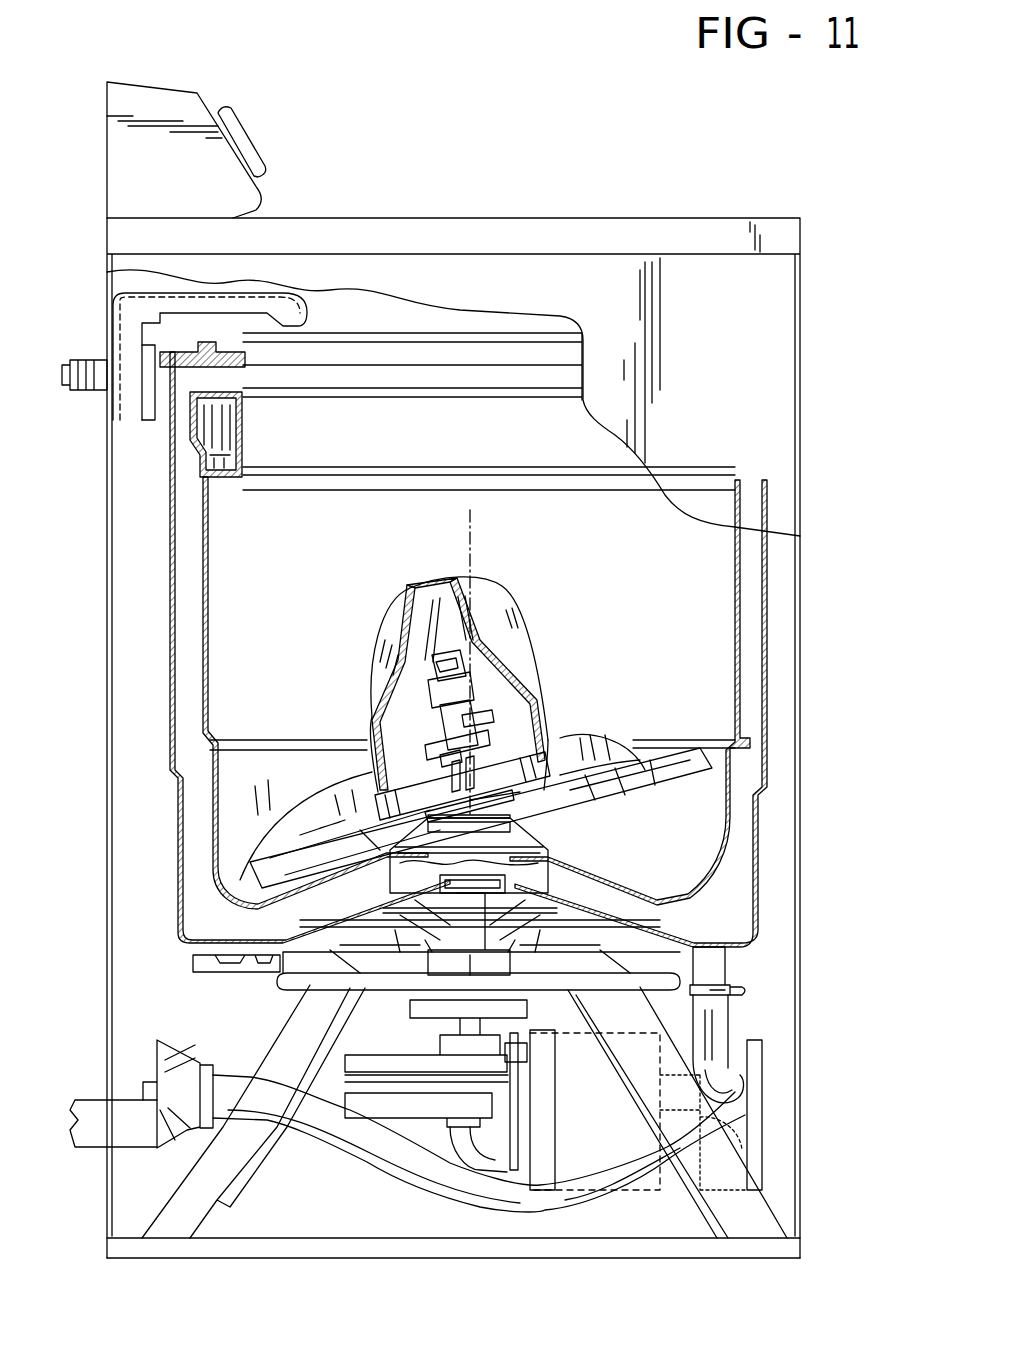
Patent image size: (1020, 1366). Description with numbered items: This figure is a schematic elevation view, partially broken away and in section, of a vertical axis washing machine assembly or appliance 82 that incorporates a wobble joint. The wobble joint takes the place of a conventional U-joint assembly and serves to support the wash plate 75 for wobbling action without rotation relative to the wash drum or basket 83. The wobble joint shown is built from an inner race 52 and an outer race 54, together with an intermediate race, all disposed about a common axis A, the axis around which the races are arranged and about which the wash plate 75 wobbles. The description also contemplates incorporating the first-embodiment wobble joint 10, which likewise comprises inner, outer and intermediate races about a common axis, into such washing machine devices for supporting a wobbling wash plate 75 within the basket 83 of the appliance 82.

The wobble joint 10 is at (572, 772).
The inner race 52 is at (433, 768).
The outer race 54 is at (430, 796).
The wash plate 75 is at (565, 768).
The vertical axis washing machine assembly 82 is at (822, 484).
The wash drum or basket 83 is at (738, 663).
The common axis A is at (473, 541).